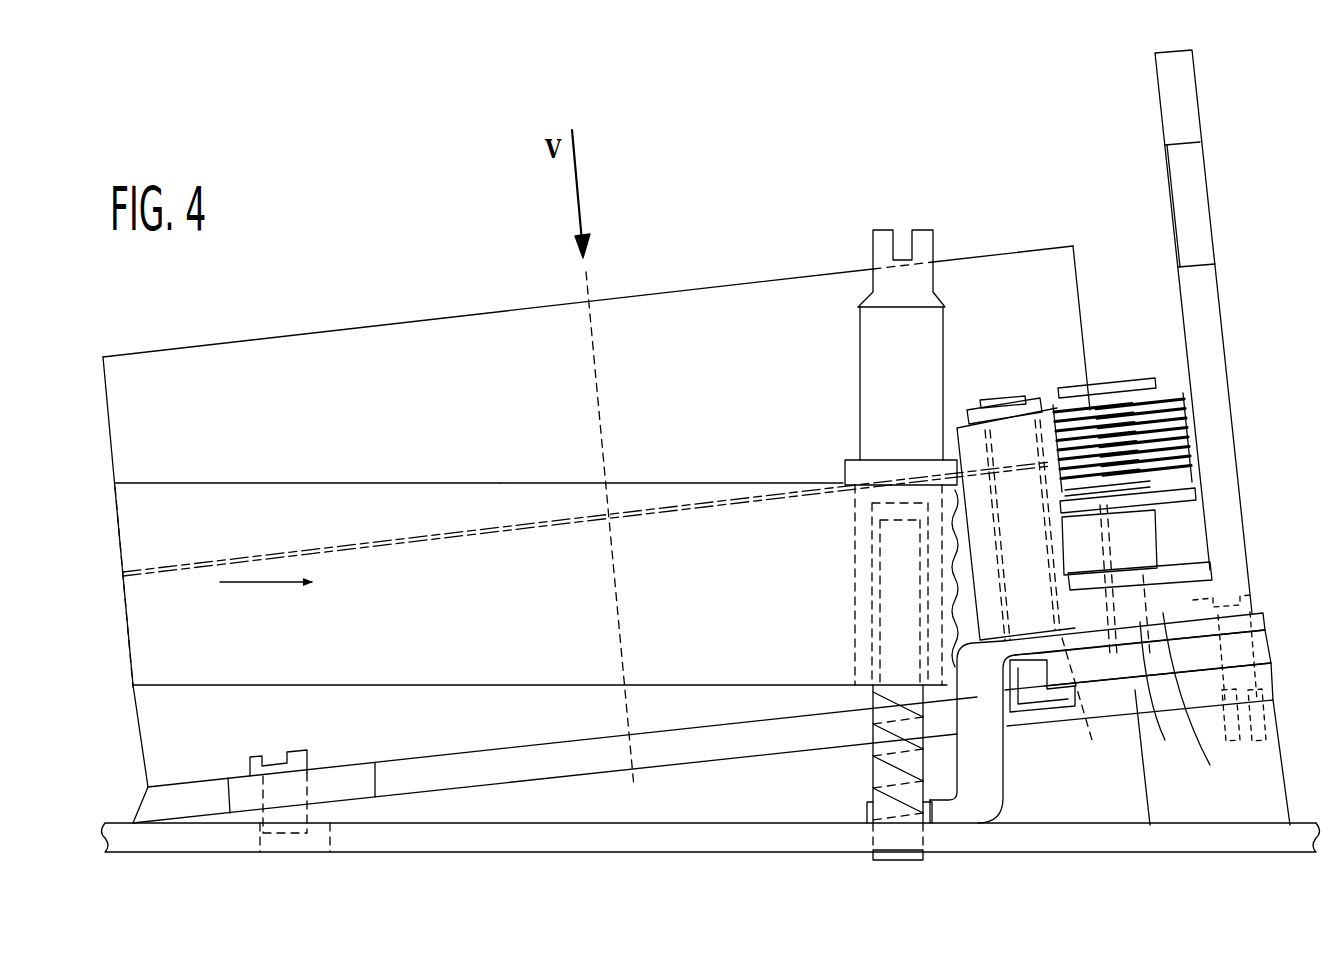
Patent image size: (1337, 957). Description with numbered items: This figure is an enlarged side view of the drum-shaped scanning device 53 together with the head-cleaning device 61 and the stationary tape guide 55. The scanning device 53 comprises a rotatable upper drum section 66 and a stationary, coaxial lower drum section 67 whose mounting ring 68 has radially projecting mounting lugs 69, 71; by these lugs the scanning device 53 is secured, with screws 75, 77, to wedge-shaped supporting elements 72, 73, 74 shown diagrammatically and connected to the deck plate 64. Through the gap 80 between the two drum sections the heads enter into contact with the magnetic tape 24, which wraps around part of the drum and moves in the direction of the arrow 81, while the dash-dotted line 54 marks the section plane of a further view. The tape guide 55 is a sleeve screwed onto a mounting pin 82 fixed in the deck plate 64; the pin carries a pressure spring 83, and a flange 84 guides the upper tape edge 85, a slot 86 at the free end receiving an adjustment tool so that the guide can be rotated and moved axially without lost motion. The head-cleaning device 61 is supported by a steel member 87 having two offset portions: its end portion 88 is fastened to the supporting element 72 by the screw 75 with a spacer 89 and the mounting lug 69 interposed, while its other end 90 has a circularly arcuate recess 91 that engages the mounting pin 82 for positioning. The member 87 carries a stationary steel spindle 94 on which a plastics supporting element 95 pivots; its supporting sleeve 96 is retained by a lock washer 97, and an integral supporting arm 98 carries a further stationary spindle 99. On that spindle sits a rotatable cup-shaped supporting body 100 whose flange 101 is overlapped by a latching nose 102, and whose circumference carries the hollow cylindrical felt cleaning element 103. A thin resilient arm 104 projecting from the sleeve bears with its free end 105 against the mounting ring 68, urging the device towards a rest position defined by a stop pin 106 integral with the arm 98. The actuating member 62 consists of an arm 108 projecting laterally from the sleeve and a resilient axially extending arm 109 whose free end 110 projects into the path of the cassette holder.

The magnetic tape 24 is at (187, 492).
The drum-shaped scanning device 53 is at (182, 350).
The pivot axis line 54 is at (590, 294).
The stationary tape guide 55 is at (952, 236).
The head-cleaning device 61 is at (1123, 322).
The actuating member 62 is at (1160, 223).
The deck plate 64 is at (1177, 845).
The upper drum section 66 is at (695, 291).
The lower drum section 67 is at (145, 695).
The mounting ring 68 is at (542, 750).
The mounting lug 69 is at (1266, 682).
The mounting lug 71 is at (353, 771).
The wedge-shaped supporting element 72 is at (1265, 787).
The wedge-shaped supporting element 73 is at (222, 820).
The wedge-shaped supporting element 74 is at (375, 806).
The screw 75 is at (1250, 613).
The screw 77 is at (296, 752).
The gap 80 is at (522, 520).
The arrow 81 is at (266, 608).
The mounting pin 82 is at (860, 712).
The pressure spring 83 is at (862, 757).
The flange 84 is at (845, 478).
The upper tape edge 85 is at (680, 482).
The slot 86 is at (903, 242).
The steel member 87 is at (1010, 796).
The end portion 88 is at (1262, 622).
The spacer 89 is at (1266, 647).
The other end 90 is at (942, 812).
The circularly arcuate recess 91 is at (866, 810).
The stationary steel spindle 94 is at (1003, 398).
The plastics supporting element 95 is at (960, 568).
The supporting sleeve 96 is at (962, 430).
The lock washer 97 is at (1035, 400).
The supporting arm 98 is at (1148, 540).
The further stationary spindle 99 is at (1100, 383).
The cup-shaped supporting body 100 is at (1150, 378).
The flange 101 is at (1190, 493).
The latching nose 102 is at (1172, 478).
The hollow cylindrical cleaning element 103 is at (1140, 420).
The thin resilient arm 104 is at (1087, 706).
The free end 105 is at (1043, 705).
The stop pin 106 is at (1164, 698).
The arm 108 is at (1200, 705).
The arm 109 is at (1214, 341).
The free end 110 is at (1200, 105).